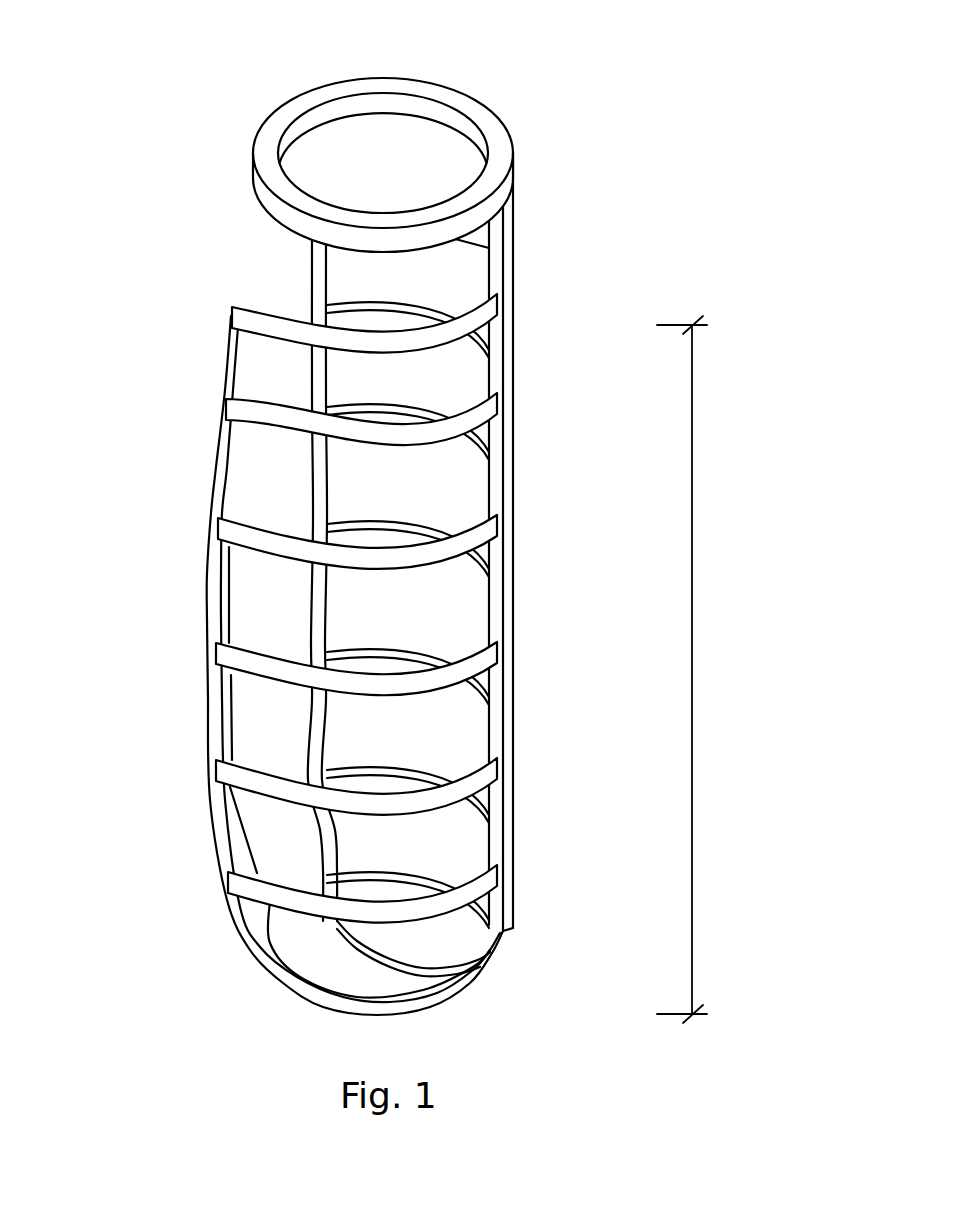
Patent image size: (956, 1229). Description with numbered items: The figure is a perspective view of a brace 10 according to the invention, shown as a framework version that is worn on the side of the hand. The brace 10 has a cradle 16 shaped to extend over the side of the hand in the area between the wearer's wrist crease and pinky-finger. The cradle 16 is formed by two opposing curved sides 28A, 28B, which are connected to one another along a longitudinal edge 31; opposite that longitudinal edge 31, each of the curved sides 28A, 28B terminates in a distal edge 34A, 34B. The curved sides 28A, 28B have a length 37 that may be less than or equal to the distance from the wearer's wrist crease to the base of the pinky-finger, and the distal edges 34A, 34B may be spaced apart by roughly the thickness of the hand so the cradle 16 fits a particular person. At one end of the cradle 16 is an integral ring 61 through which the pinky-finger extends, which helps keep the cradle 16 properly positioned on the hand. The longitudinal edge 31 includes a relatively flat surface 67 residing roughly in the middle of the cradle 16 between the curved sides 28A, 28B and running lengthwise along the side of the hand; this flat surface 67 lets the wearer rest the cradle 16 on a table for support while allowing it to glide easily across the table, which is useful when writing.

The brace 10 is at (391, 507).
The cradle 16 is at (180, 763).
The curved side 28A is at (372, 697).
The curved side 28B is at (367, 647).
The longitudinal edge 31 is at (513, 467).
The distal edge 34A is at (207, 608).
The distal edge 34B is at (313, 460).
The length 37 is at (693, 562).
The ring 61 is at (440, 87).
The relatively flat surface 67 is at (513, 588).